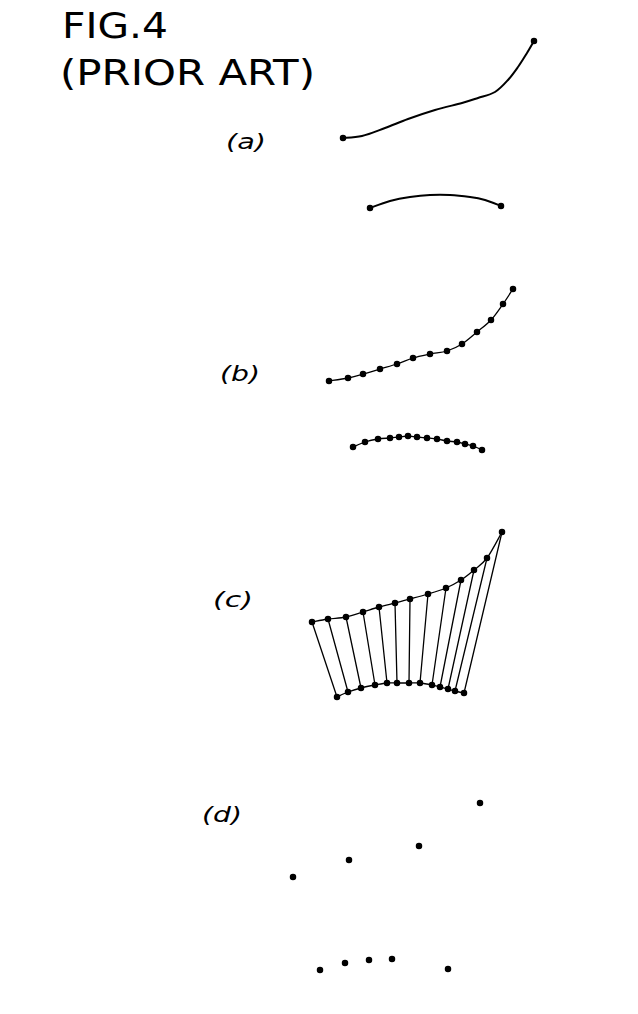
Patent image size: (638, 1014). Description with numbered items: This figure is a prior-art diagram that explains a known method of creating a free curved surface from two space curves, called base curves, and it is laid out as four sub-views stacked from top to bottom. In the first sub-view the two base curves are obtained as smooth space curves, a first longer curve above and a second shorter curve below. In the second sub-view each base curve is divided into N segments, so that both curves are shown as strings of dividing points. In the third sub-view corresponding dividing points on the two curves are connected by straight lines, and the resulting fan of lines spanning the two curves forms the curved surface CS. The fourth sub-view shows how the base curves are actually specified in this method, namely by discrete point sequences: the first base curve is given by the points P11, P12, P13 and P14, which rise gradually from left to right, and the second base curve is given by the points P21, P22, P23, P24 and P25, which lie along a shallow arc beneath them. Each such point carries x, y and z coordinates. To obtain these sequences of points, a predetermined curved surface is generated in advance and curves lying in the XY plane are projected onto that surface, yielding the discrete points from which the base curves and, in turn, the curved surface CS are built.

The curved surface CS is at (472, 632).
The discrete point of first base curve P11 is at (301, 864).
The discrete point of first base curve P12 is at (354, 846).
The discrete point of first base curve P13 is at (424, 830).
The discrete point of first base curve P14 is at (481, 788).
The discrete point of second base curve P21 is at (318, 984).
The discrete point of second base curve P22 is at (351, 977).
The discrete point of second base curve P23 is at (378, 974).
The discrete point of second base curve P24 is at (405, 971).
The discrete point of second base curve P25 is at (454, 983).